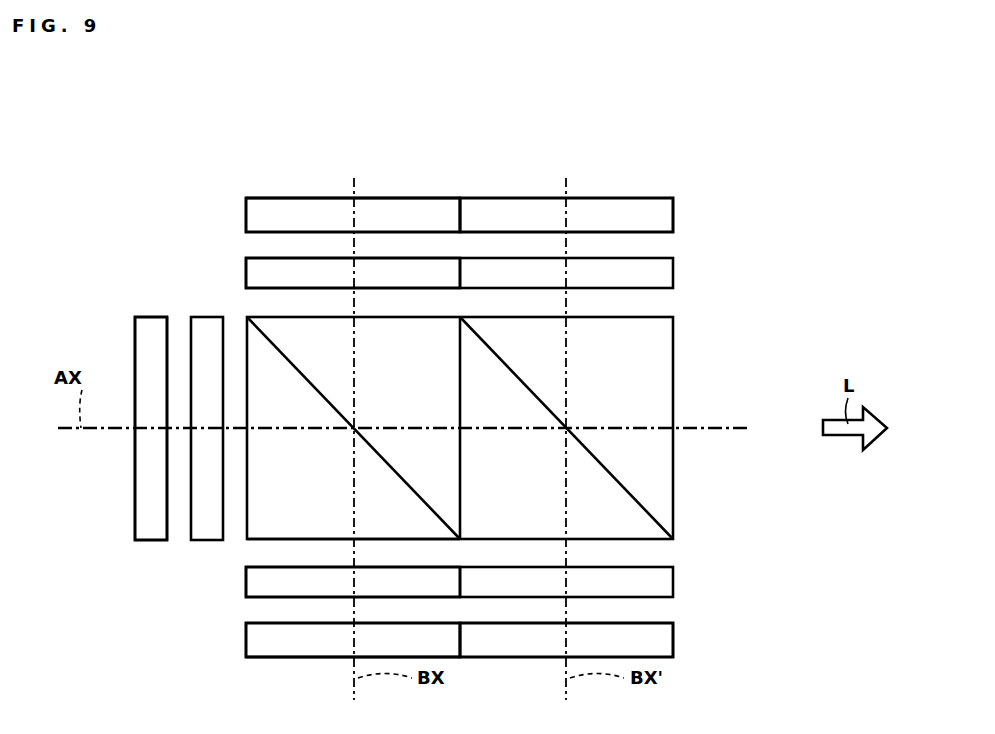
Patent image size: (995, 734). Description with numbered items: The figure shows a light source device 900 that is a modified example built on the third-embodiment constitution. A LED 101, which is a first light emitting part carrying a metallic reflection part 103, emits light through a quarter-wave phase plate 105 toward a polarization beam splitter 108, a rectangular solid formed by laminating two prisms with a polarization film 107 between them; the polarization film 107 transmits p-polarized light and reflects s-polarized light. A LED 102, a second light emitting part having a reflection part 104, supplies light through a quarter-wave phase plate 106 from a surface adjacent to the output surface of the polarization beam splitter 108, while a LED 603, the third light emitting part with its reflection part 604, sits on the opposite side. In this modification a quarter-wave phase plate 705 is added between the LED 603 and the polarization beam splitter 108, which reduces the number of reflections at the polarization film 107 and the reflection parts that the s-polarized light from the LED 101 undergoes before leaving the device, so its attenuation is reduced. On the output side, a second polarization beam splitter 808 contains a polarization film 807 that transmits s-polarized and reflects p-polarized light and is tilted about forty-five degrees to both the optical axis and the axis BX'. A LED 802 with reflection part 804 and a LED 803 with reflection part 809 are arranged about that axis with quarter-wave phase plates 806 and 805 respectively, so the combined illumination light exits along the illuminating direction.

The light source device 900 is at (641, 168).
The LED 101 is at (150, 316).
The reflection part 103 is at (142, 512).
The λ/4 phase plate 105 is at (200, 318).
The polarization film 107 is at (256, 321).
The polarization beam splitter 108 is at (262, 537).
The λ/4 phase plate 106 is at (262, 258).
The reflection part 104 is at (277, 199).
The LED 102 is at (383, 205).
The reflection part 804 is at (501, 198).
The LED 802 is at (670, 214).
The λ/4 phase plate 806 is at (670, 272).
The polarization beam splitter 808 is at (665, 332).
The polarization film 807 is at (662, 520).
The λ/4 phase plate 805 is at (670, 577).
The LED 803 is at (670, 636).
The λ/4 phase plate 705 is at (256, 590).
The LED 603 is at (258, 642).
The reflection part 604 is at (270, 658).
The reflection part 809 is at (488, 658).